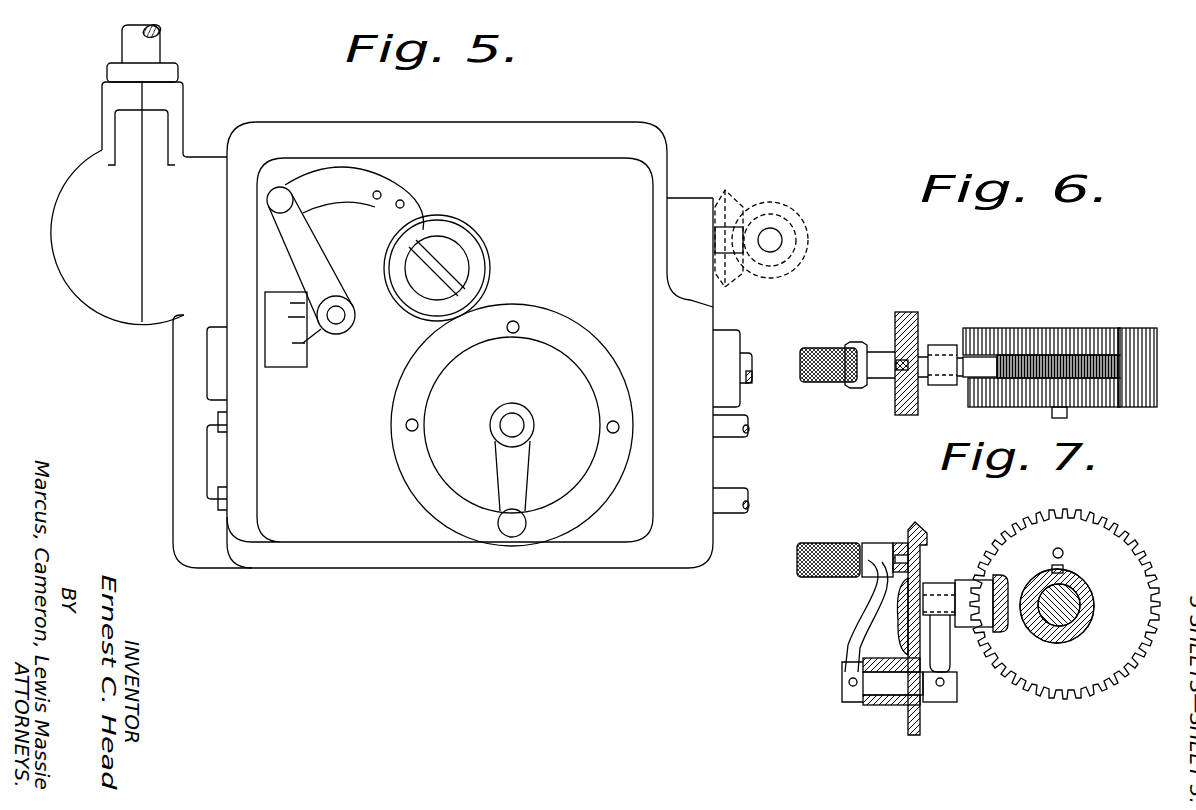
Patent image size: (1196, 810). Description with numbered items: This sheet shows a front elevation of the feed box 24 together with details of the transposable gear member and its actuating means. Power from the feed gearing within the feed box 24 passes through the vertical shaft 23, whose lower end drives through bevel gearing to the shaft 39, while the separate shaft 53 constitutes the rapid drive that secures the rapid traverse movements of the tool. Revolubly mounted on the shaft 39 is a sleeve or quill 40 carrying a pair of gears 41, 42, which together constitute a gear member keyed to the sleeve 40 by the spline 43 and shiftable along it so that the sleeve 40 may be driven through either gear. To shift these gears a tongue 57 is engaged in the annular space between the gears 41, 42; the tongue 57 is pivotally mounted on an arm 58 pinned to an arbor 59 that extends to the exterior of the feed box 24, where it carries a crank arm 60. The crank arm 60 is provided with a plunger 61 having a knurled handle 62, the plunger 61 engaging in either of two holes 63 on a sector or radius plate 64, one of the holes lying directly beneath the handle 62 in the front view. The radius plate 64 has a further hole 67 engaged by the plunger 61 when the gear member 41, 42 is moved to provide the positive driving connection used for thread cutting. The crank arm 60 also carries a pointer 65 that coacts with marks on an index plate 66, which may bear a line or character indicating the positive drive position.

In FIG. 5, the vertical shaft 23 is at (155, 53).
In FIG. 5, the feed box 24 is at (523, 172).
In FIG. 6, the feed box 24 is at (905, 313).
In FIG. 7, the feed box 24 is at (920, 580).
In FIG. 7, the shaft 39 is at (1063, 627).
In FIG. 7, the sleeve or quill 40 is at (1093, 597).
In FIG. 6, the gear 41 is at (1003, 367).
In FIG. 7, the gear 41 is at (1082, 513).
In FIG. 6, the gear 42 is at (1073, 385).
In FIG. 7, the gear 42 is at (1103, 552).
In FIG. 7, the spline 43 is at (1053, 568).
In FIG. 5, the shaft 53 is at (770, 240).
In FIG. 6, the tongue 57 is at (973, 367).
In FIG. 7, the tongue 57 is at (980, 592).
In FIG. 6, the arm 58 is at (943, 353).
In FIG. 7, the arm 58 is at (942, 650).
In FIG. 5, the arbor 59 is at (338, 312).
In FIG. 7, the arbor 59 is at (892, 688).
In FIG. 5, the crank arm 60 is at (320, 267).
In FIG. 6, the crank arm 60 is at (880, 375).
In FIG. 7, the crank arm 60 is at (853, 635).
In FIG. 6, the plunger 61 is at (893, 357).
In FIG. 7, the plunger 61 is at (900, 553).
In FIG. 5, the knurled handle 62 is at (276, 192).
In FIG. 6, the knurled handle 62 is at (813, 350).
In FIG. 7, the knurled handle 62 is at (817, 575).
In FIG. 5, the holes 63 is at (382, 192).
In FIG. 5, the sector or radius plate 64 is at (335, 183).
In FIG. 5, the pointer 65 is at (318, 330).
In FIG. 5, the index plate 66 is at (282, 362).
In FIG. 5, the hole 67 is at (405, 202).